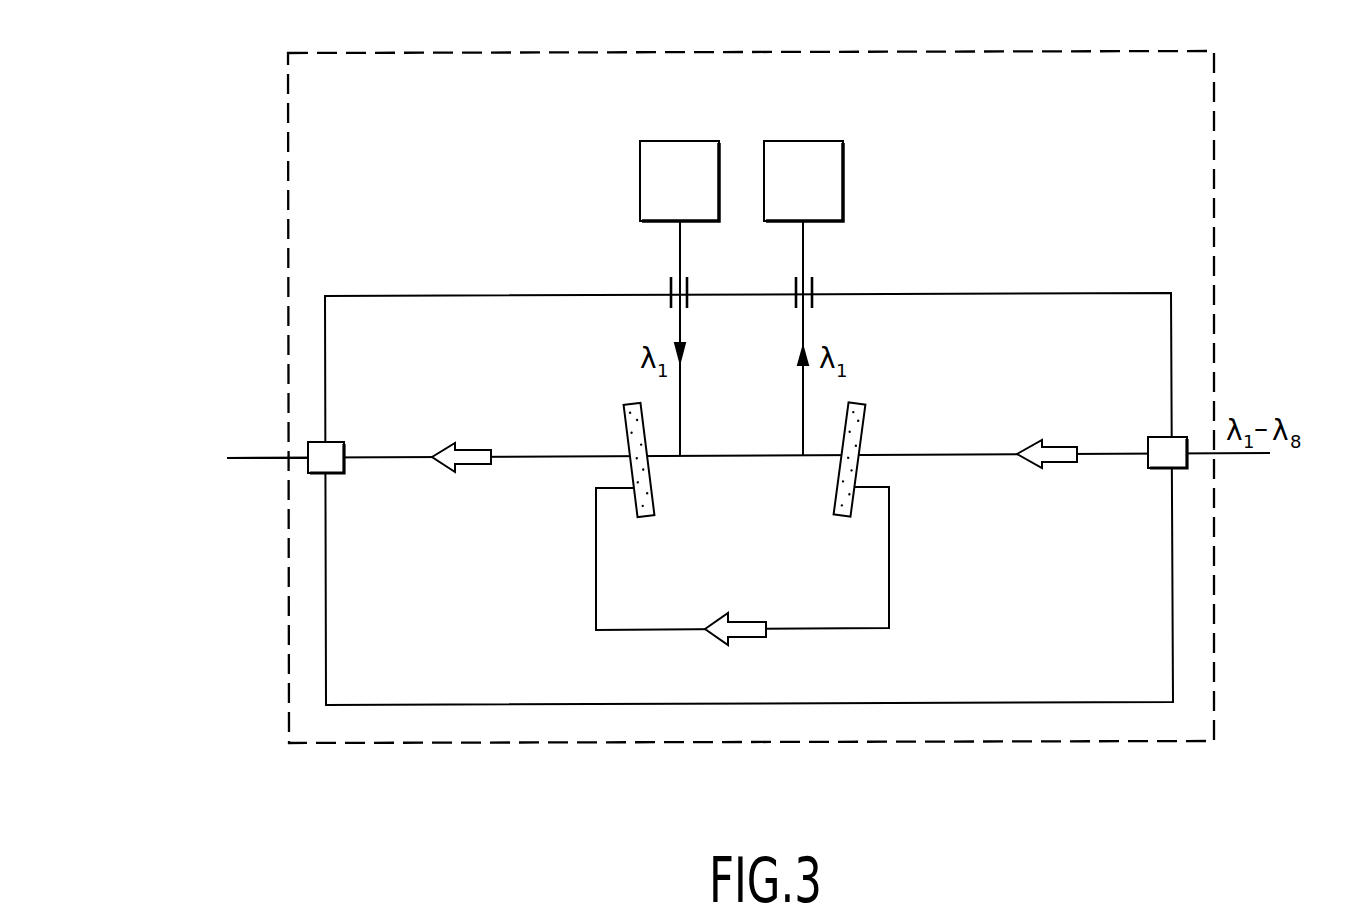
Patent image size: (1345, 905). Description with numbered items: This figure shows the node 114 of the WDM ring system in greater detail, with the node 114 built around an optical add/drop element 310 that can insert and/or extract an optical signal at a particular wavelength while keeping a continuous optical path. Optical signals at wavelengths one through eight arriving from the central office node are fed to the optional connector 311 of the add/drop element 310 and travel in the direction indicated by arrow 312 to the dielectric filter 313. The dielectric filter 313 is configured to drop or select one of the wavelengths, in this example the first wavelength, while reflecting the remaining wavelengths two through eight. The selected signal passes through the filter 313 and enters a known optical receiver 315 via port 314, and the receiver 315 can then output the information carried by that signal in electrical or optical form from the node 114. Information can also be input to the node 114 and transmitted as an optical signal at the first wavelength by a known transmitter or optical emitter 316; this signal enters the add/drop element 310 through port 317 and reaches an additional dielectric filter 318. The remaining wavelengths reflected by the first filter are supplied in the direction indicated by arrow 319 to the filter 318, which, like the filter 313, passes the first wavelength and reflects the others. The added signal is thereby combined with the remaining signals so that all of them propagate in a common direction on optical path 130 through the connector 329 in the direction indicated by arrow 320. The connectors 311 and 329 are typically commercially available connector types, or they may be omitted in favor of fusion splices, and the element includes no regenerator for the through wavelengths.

The node 114 is at (1177, 741).
The optical path 130 is at (248, 458).
The optical add/drop element 310 is at (1172, 337).
The connector 311 is at (1185, 470).
The arrow 312 is at (1057, 463).
The dielectric filter 313 is at (866, 422).
The port 314 is at (812, 290).
The optical receiver 315 is at (843, 150).
The transmitter 316 is at (662, 141).
The port 317 is at (671, 290).
The dielectric filter 318 is at (623, 425).
The arrow 319 is at (747, 620).
The arrow 320 is at (473, 467).
The connector 329 is at (333, 442).